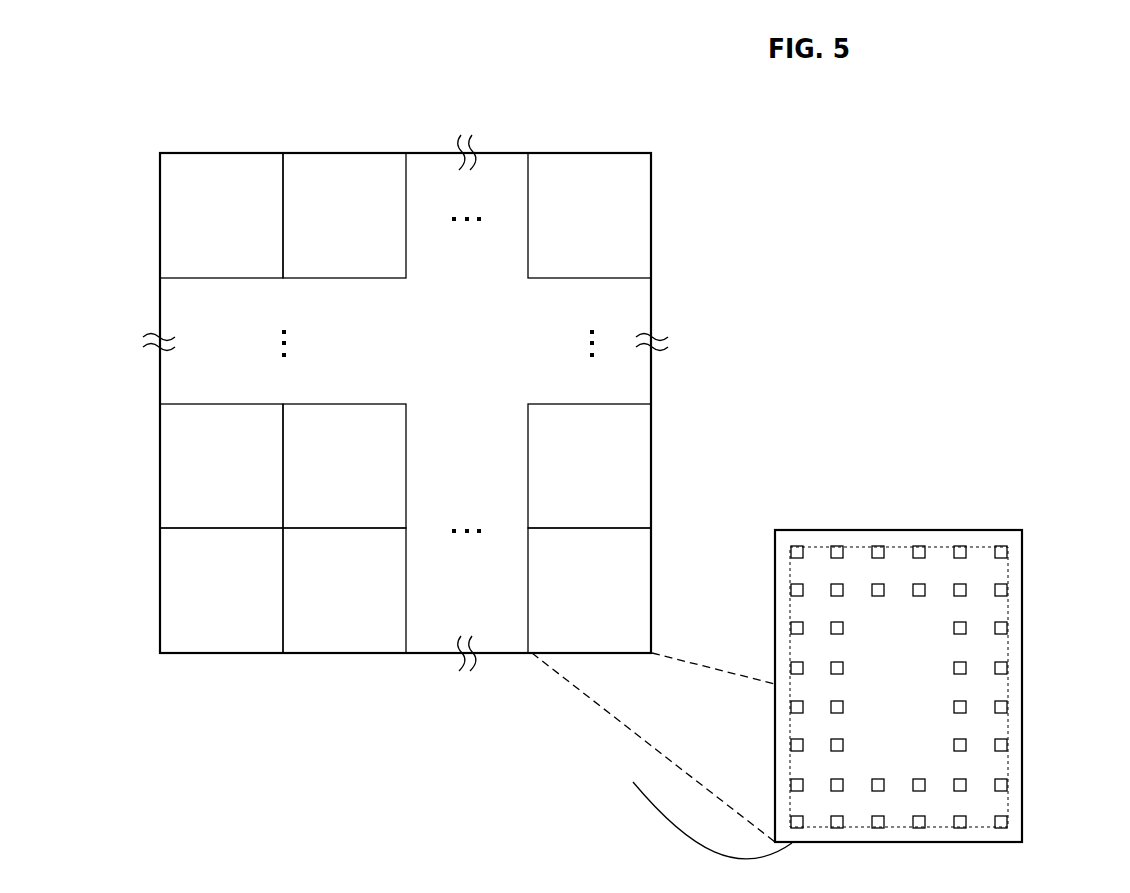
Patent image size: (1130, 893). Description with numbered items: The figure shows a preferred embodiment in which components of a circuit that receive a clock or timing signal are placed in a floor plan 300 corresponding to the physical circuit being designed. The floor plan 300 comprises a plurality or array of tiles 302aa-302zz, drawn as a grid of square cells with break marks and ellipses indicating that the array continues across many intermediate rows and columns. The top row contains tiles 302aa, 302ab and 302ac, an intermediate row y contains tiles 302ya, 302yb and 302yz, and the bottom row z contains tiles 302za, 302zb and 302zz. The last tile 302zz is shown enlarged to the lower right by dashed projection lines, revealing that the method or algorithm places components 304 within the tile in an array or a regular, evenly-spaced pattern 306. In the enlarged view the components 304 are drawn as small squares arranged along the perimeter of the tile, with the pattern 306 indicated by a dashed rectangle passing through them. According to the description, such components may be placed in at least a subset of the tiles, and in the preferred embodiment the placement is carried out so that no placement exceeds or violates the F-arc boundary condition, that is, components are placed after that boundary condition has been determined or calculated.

The floor plan 300 is at (201, 92).
The tile 302aa is at (208, 153).
The tile 302ab is at (346, 153).
The tile 302ac is at (608, 153).
The tile 302ya is at (160, 453).
The tile 302yb is at (370, 404).
The tile 302yz is at (652, 500).
The tile 302za is at (160, 623).
The tile 302zb is at (318, 653).
The tile 302zz is at (605, 653).
The components 304 is at (943, 656).
The regular or evenly-spaced pattern 306 is at (1008, 723).